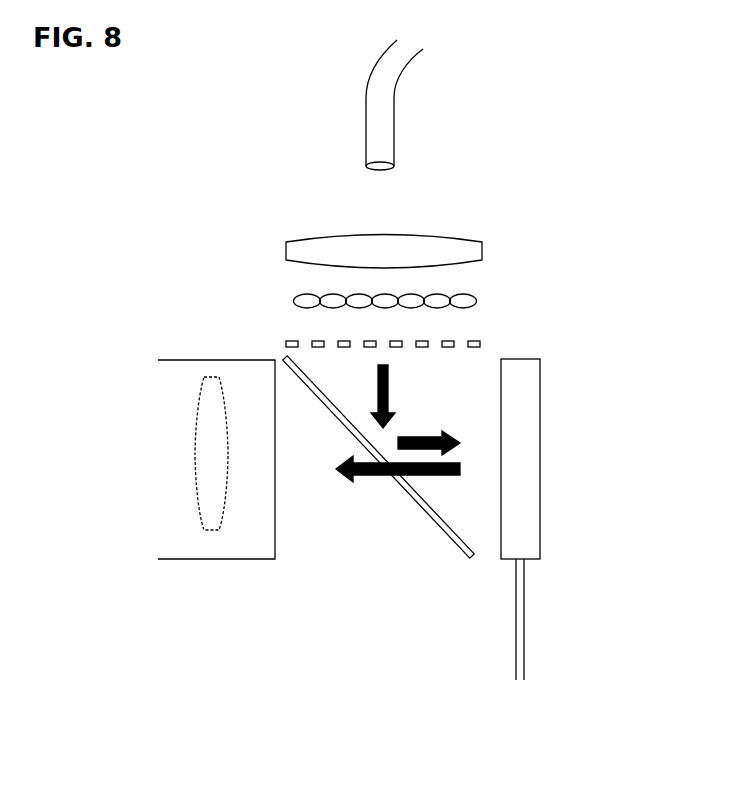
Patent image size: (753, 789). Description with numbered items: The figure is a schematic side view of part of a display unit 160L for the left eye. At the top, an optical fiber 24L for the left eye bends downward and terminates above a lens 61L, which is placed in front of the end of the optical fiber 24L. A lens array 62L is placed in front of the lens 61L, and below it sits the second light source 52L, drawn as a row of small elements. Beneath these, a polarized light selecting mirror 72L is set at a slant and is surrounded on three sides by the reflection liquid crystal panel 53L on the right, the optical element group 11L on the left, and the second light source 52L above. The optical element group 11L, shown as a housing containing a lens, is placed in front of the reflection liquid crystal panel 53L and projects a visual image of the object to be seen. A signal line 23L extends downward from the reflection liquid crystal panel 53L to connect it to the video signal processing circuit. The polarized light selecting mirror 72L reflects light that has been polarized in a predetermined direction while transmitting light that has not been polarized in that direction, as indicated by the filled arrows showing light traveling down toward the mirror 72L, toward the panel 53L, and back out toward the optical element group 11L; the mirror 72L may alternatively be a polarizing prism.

The display unit for the left eye 160L is at (605, 142).
The optical fiber for the left eye 24L is at (366, 101).
The lens 61L is at (343, 235).
The lens array 62L is at (300, 295).
The second light source 52L is at (292, 341).
The optical element group 11L is at (212, 559).
The polarized light selecting mirror 72L is at (423, 512).
The reflection liquid crystal panel 53L is at (540, 437).
The signal line 23L is at (524, 632).